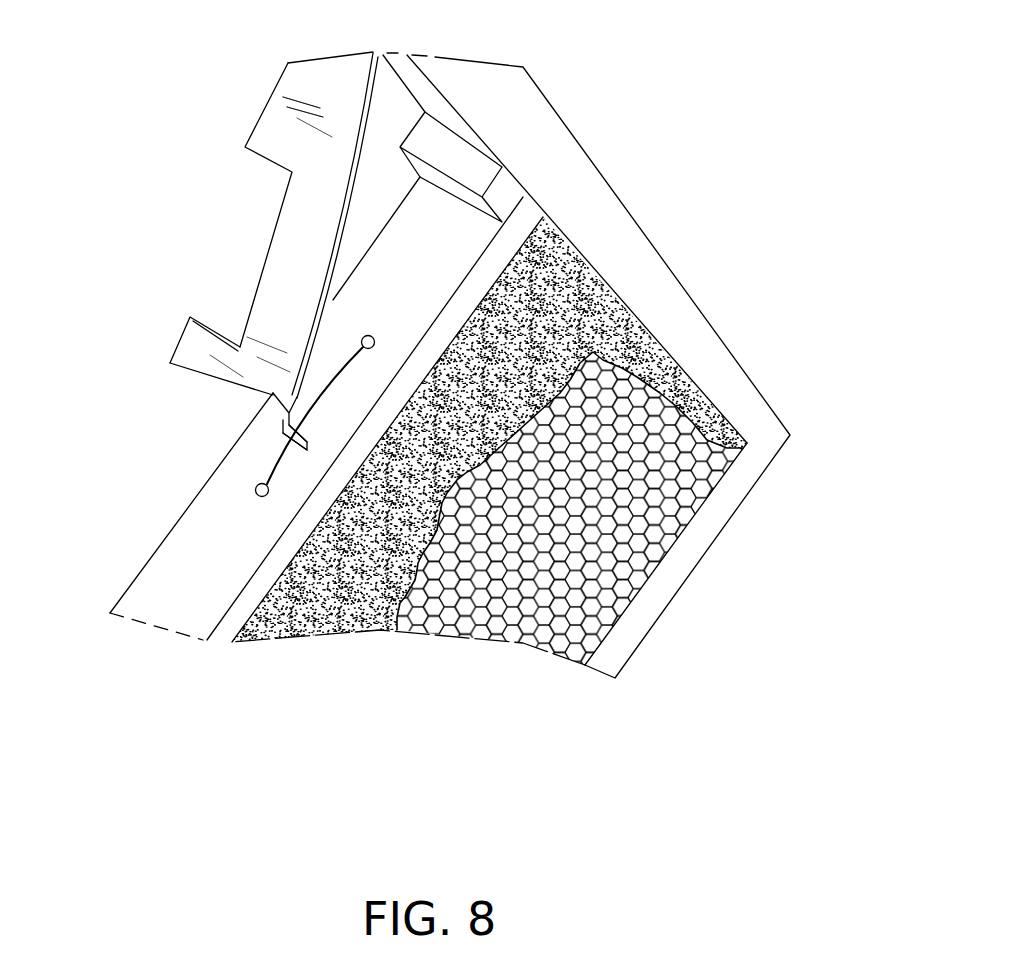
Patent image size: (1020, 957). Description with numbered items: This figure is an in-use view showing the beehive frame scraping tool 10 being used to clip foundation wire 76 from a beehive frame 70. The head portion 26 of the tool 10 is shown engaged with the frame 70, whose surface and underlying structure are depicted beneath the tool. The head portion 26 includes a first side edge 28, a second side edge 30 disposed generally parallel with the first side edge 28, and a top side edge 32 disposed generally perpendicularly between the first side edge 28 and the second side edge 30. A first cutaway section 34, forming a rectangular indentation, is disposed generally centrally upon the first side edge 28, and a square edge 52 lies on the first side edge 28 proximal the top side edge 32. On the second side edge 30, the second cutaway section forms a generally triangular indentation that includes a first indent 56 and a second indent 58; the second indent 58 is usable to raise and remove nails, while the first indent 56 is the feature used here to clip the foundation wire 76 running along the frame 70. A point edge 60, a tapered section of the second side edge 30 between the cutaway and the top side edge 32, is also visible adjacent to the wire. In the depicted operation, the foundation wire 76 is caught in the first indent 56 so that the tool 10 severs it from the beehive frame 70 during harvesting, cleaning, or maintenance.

The beehive frame scraping tool 10 is at (140, 164).
The head portion 26 is at (296, 100).
The first side edge 28 is at (258, 118).
The second side edge 30 is at (350, 222).
The top side edge 32 is at (213, 391).
The first cutaway section 34 is at (228, 269).
The square edge 52 is at (180, 342).
The first indent 56 is at (305, 445).
The second indent 58 is at (273, 395).
The point edge 60 is at (285, 442).
The beehive frame 70 is at (545, 280).
The foundation wire 76 is at (273, 452).